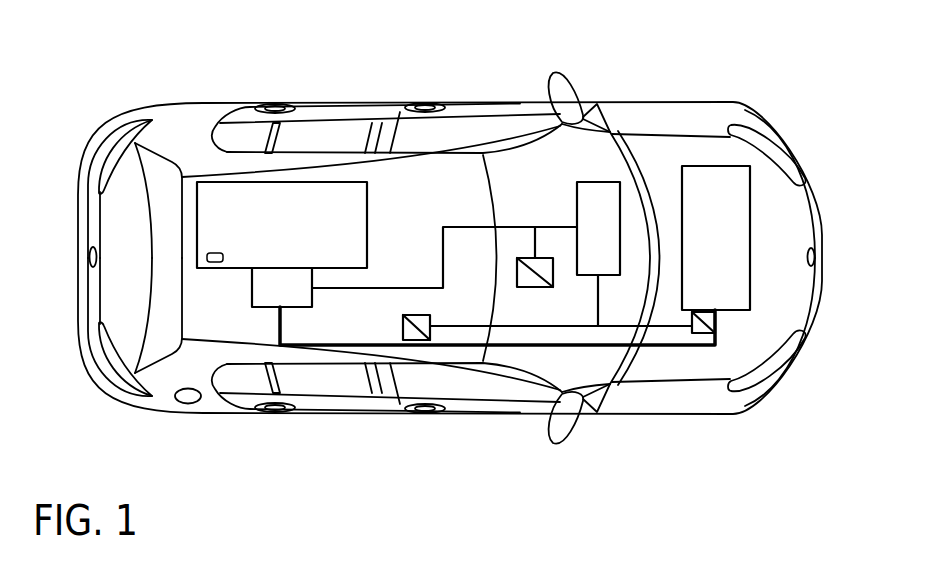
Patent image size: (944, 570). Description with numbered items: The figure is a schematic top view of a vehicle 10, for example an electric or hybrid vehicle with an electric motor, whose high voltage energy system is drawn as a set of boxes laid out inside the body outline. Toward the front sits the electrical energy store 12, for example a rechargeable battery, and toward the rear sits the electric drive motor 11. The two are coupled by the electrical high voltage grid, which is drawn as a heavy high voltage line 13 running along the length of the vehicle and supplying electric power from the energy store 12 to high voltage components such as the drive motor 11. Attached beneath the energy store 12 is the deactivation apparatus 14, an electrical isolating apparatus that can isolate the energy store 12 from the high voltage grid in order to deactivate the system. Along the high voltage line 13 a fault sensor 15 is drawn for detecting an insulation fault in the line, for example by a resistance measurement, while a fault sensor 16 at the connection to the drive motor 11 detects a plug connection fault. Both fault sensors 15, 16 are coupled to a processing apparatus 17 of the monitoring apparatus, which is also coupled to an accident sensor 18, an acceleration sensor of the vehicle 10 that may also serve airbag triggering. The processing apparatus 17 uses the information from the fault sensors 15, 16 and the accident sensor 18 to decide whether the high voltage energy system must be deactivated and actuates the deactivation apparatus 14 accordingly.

The vehicle 10 is at (128, 66).
The electric drive motor 11 is at (750, 230).
The electrical energy store 12 is at (365, 210).
The high voltage line 13 is at (657, 345).
The deactivation apparatus 14 is at (250, 288).
The fault sensor 15 is at (403, 330).
The fault sensor 16 is at (702, 332).
The processing apparatus 17 is at (577, 202).
The accident sensor 18 is at (530, 285).